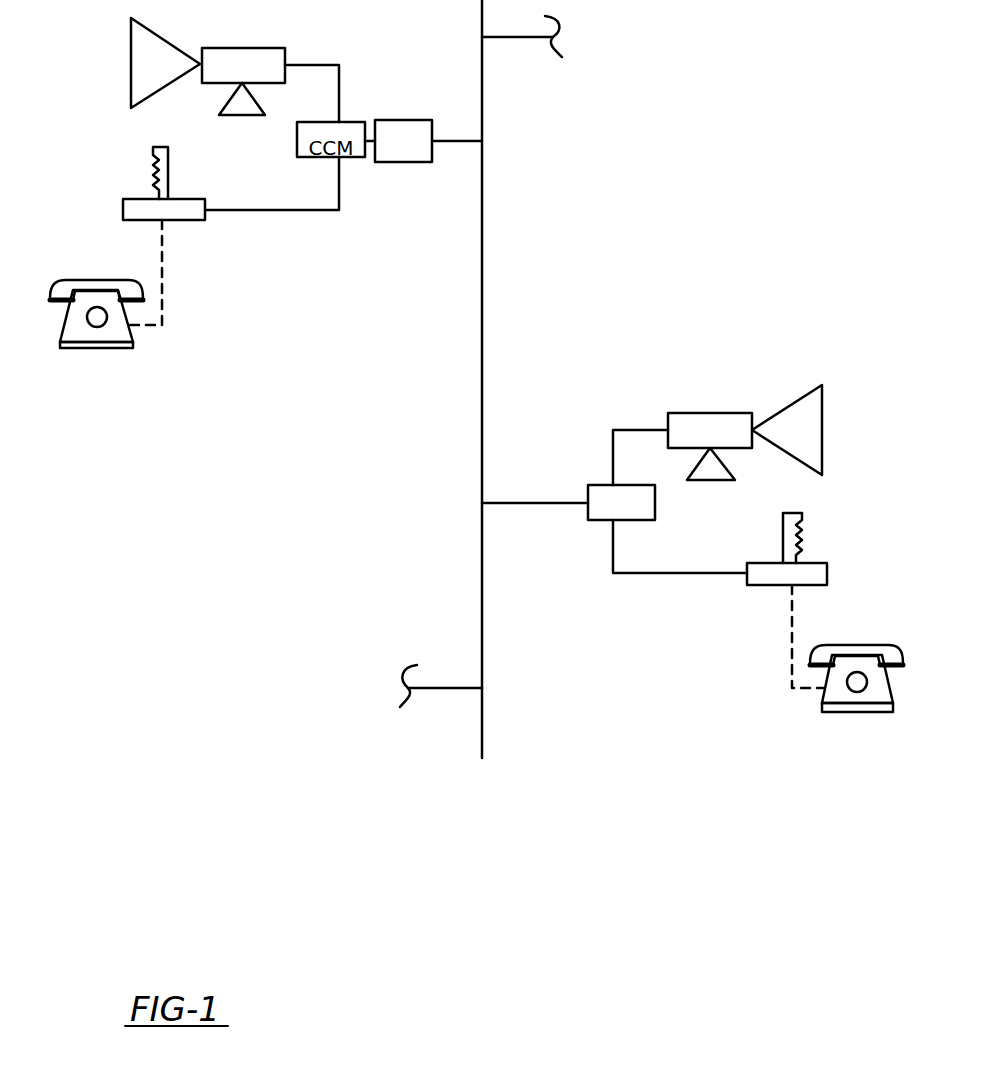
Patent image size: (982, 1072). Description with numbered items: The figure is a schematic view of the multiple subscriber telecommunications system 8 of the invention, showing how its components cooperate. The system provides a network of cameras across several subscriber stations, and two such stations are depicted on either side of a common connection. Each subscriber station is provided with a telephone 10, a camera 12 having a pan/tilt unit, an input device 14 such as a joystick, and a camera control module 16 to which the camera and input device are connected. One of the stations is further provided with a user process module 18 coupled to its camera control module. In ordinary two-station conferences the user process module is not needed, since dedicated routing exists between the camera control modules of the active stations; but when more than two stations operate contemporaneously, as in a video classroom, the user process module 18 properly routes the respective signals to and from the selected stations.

The multiple subscriber telecommunications system 8 is at (647, 126).
The telephone 10 is at (882, 720).
The camera 12 is at (710, 413).
The input device 14 is at (815, 563).
The camera control module 16 is at (589, 486).
The user process module 18 is at (411, 128).